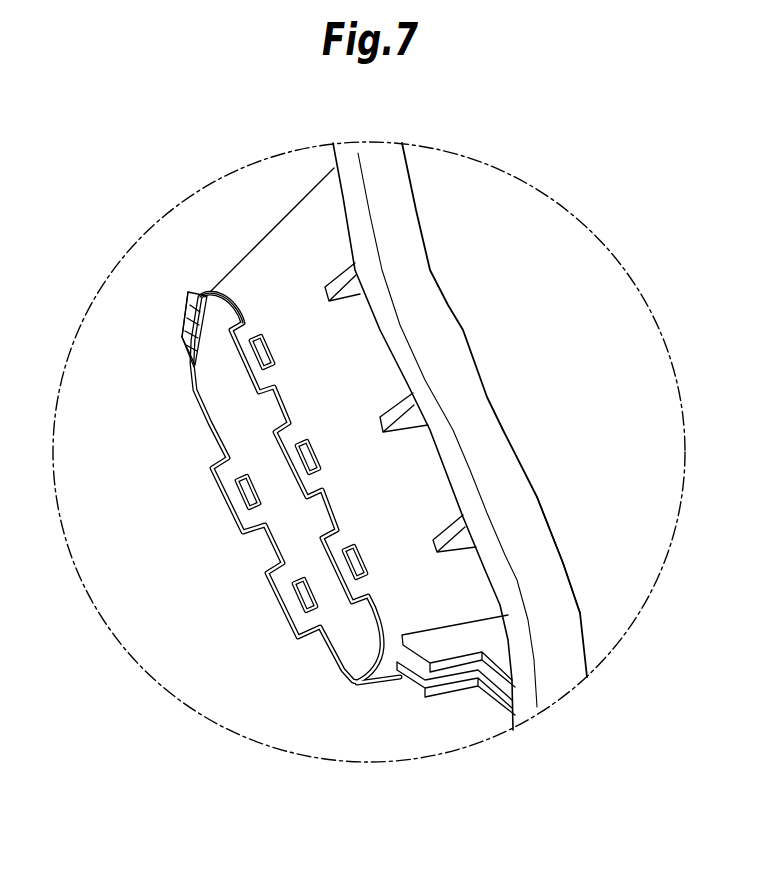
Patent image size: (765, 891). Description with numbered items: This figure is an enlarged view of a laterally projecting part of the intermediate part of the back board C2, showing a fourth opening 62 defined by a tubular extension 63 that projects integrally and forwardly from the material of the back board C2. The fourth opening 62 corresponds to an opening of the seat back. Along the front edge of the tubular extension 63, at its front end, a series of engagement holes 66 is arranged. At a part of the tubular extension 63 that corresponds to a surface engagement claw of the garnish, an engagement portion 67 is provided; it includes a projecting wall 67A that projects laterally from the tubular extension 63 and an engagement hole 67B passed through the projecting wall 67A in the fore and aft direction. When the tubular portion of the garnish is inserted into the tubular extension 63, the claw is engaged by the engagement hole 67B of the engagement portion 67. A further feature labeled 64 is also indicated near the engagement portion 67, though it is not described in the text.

The fourth opening 62 is at (247, 419).
The tubular extension 63 is at (418, 472).
The bent portion 64 is at (212, 295).
The engagement holes 66 is at (265, 343).
The engagement portion 67 is at (175, 347).
The projecting wall 67A is at (181, 329).
The engagement hole 67B is at (187, 293).
The back board C2 is at (578, 567).